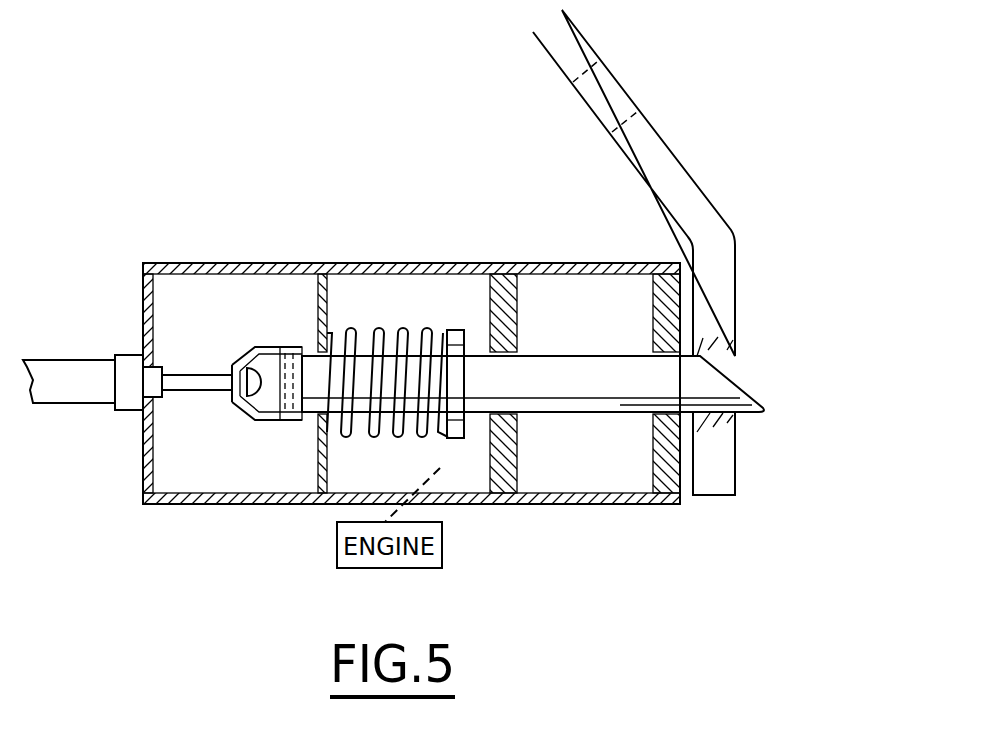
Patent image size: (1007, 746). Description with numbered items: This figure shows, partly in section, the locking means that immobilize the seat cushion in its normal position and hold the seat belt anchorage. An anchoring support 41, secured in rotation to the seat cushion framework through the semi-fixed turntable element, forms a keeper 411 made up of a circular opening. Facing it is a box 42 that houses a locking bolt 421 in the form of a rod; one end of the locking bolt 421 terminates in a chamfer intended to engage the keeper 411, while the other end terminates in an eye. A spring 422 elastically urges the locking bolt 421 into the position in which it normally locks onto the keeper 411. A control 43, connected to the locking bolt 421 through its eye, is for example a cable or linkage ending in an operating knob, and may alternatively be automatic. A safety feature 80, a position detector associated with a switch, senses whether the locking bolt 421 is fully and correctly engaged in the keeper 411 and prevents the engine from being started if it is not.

The anchoring support 41 is at (673, 190).
The keeper 411 is at (730, 366).
The box 42 is at (386, 263).
The locking bolt 421 is at (560, 363).
The spring 422 is at (388, 336).
The control 43 is at (88, 382).
The safety feature 80 is at (462, 437).